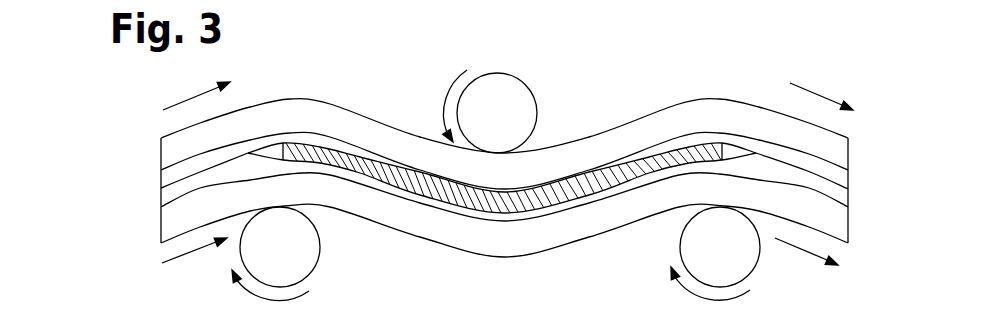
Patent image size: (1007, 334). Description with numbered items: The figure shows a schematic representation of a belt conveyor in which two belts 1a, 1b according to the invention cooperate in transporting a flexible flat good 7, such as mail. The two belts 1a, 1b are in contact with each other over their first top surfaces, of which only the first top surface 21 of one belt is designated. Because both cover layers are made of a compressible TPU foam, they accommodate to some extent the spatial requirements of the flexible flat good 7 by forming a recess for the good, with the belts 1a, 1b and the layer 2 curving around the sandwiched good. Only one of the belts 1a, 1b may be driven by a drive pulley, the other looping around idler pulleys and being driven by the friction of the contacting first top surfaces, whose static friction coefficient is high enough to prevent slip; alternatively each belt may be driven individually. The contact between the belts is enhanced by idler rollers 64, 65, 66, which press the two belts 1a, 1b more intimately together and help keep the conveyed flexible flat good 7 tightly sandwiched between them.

The belt 1a is at (126, 222).
The belt 1b is at (139, 152).
The carrier layer 2 is at (167, 200).
The flexible flat good 7 is at (700, 146).
The first top surface 21 is at (281, 153).
The idler roller 64 is at (293, 248).
The idler roller 65 is at (497, 117).
The idler roller 66 is at (717, 243).